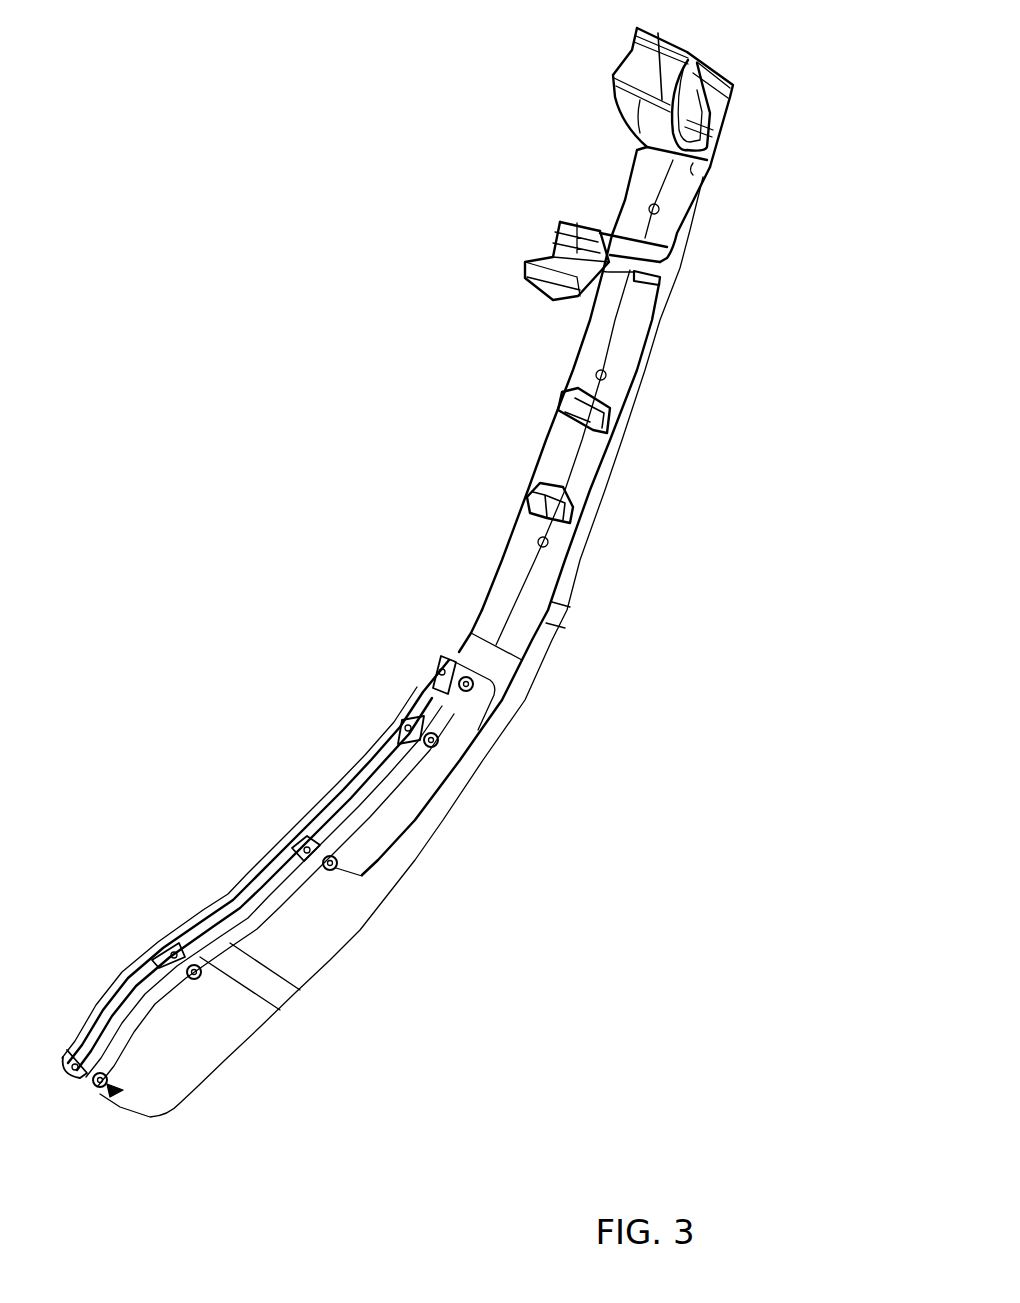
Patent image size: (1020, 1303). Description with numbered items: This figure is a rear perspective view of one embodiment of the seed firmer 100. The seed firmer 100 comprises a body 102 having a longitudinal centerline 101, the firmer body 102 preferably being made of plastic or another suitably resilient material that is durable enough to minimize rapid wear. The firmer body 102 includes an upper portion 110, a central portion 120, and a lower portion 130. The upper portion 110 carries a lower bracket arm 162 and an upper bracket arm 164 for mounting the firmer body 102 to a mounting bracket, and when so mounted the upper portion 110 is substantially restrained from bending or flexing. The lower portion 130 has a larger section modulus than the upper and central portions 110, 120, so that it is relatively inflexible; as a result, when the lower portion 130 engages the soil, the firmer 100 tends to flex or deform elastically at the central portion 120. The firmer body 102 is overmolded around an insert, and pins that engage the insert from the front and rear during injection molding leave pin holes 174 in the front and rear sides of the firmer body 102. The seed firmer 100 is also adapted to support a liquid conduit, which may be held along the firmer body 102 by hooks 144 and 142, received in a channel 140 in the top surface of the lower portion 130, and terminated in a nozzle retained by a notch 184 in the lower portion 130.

The seed firmer 100 is at (87, 347).
The longitudinal centerline 101 is at (614, 327).
The body 102 is at (492, 623).
The upper portion 110 is at (703, 207).
The central portion 120 is at (623, 413).
The lower portion 130 is at (317, 935).
The channel 140 is at (275, 888).
The hook 142 is at (532, 512).
The hook 144 is at (563, 410).
The lower bracket arm 162 is at (553, 288).
The upper bracket arm 164 is at (633, 108).
The pin holes 174 is at (654, 215).
The notch 184 is at (103, 1102).